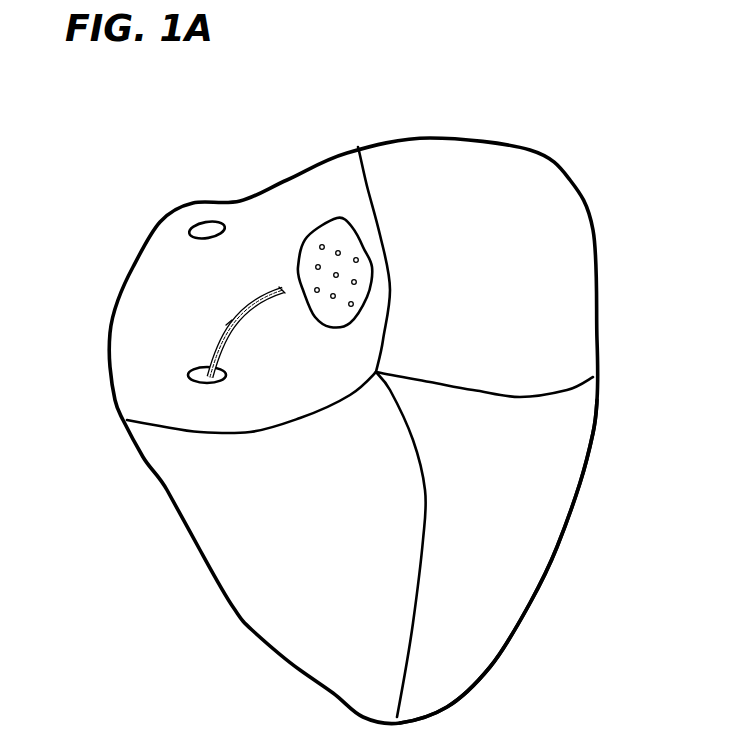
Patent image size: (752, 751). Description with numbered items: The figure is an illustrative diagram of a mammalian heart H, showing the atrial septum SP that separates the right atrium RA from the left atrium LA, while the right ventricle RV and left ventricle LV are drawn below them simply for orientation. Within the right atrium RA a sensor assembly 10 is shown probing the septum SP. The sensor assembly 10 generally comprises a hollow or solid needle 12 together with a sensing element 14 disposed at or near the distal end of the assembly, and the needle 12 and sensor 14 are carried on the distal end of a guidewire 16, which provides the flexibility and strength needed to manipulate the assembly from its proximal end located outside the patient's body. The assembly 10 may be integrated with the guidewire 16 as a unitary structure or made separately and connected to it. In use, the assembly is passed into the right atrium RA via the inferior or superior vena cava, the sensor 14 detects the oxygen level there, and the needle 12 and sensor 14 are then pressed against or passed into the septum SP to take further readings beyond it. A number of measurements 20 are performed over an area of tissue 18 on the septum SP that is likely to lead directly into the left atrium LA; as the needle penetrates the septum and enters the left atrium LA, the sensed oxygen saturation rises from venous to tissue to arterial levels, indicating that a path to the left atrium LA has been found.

The sensor assembly 10 is at (167, 294).
The needle 12 is at (275, 295).
The sensing element 14 is at (285, 287).
The guidewire 16 is at (233, 317).
The area of tissue 18 is at (306, 211).
The measurements 20 is at (338, 310).
The heart H is at (505, 94).
The right atrium RA is at (127, 268).
The left atrium LA is at (522, 155).
The septum SP is at (375, 190).
The right ventricle RV is at (252, 632).
The left ventricle LV is at (542, 590).